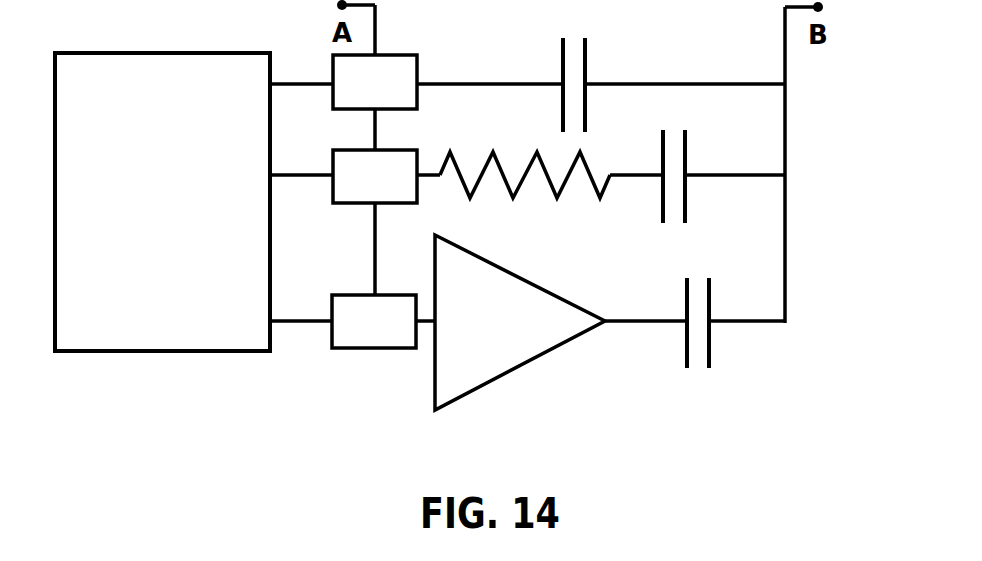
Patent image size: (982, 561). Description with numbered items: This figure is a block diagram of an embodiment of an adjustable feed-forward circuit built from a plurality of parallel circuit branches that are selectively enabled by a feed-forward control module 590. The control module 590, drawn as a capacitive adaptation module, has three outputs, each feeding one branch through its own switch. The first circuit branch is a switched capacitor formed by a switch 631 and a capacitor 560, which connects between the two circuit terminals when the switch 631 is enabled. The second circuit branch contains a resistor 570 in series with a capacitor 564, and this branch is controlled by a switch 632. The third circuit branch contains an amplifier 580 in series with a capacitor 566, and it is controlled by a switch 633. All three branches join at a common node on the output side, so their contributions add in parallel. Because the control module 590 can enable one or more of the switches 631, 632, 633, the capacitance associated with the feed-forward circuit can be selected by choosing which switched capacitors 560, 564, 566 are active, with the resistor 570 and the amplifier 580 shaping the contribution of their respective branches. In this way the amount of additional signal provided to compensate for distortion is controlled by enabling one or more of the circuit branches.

The feed-forward control module 590 is at (138, 268).
The switch 631 is at (349, 100).
The switch 632 is at (349, 192).
The switch 633 is at (348, 335).
The capacitor 560 is at (588, 70).
The capacitor 564 is at (688, 143).
The capacitor 566 is at (683, 312).
The resistor 570 is at (513, 198).
The amplifier 580 is at (521, 333).